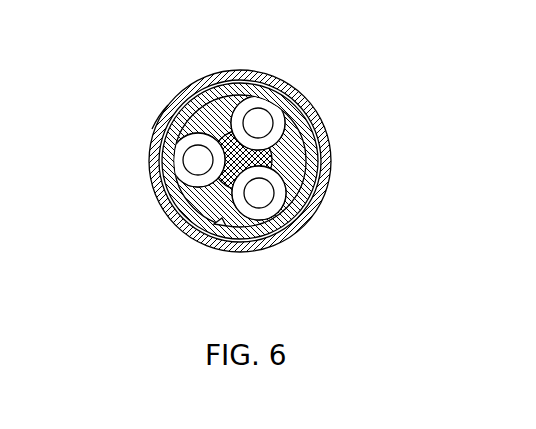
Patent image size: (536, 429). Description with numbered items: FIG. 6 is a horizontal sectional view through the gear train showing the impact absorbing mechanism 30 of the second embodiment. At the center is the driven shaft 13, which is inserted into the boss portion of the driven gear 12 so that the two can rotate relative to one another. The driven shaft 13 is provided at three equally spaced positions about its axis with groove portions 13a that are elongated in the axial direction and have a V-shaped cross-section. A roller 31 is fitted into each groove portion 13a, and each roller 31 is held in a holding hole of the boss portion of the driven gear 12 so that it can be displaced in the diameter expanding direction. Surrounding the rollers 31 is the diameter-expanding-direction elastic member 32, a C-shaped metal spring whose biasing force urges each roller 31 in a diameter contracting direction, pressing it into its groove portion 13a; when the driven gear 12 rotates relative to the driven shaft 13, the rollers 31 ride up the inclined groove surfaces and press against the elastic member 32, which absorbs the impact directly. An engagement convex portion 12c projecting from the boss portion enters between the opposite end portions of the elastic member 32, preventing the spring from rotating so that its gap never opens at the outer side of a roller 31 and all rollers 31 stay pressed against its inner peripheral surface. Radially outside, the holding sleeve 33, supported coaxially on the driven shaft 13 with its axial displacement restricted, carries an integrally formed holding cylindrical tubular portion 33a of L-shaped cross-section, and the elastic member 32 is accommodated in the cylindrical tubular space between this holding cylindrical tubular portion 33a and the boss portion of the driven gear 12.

The impact absorbing mechanism 30 is at (157, 84).
The diameter-expanding-direction elastic member 32 is at (310, 190).
The holding sleeve 33 is at (104, 113).
The holding cylindrical tubular portion 33a is at (156, 128).
The roller 31 is at (303, 94).
The driven shaft 13 is at (298, 155).
The groove portion 13a is at (263, 122).
The driven gear 12 is at (230, 151).
The engagement convex portion 12c is at (211, 244).